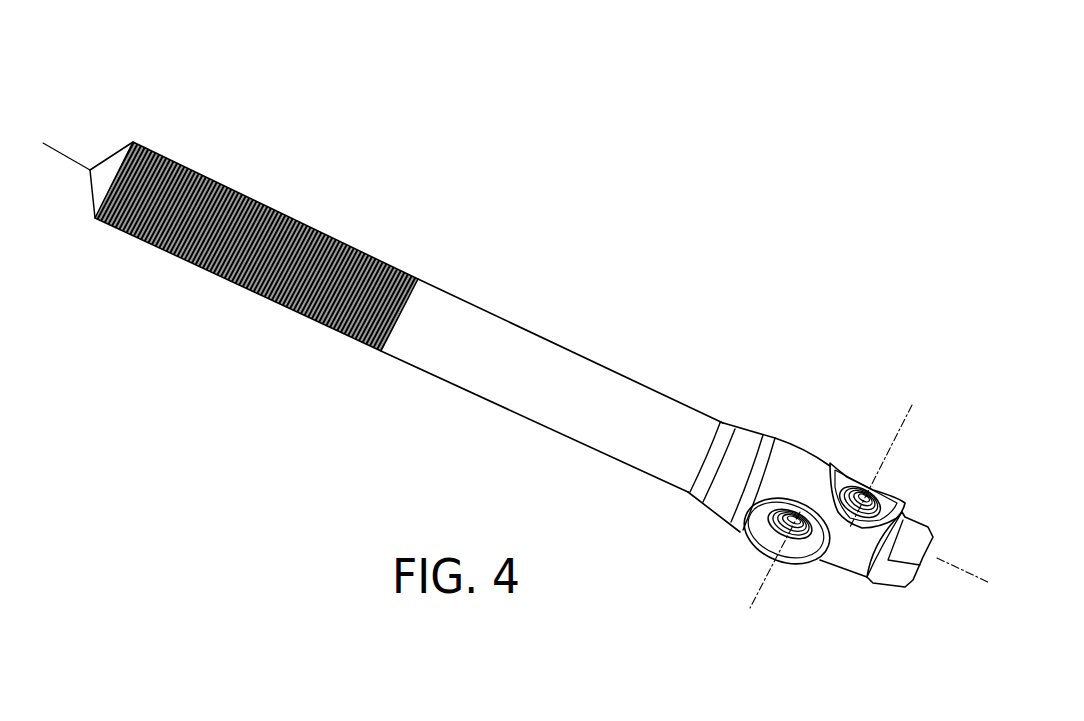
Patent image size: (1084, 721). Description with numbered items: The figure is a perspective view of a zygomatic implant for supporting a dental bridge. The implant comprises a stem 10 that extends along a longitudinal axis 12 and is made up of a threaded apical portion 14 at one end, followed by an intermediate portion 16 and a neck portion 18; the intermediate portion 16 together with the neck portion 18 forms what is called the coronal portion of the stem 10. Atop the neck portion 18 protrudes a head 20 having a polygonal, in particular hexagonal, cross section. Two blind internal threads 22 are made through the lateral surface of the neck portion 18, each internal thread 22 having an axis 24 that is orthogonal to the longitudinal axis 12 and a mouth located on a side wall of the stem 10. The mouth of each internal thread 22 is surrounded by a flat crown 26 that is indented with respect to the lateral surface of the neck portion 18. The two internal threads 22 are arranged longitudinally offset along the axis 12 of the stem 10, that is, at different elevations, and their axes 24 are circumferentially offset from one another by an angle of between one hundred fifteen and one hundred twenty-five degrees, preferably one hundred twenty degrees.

The stem 10 is at (522, 313).
The longitudinal axis 12 is at (67, 157).
The threaded apical portion 14 is at (228, 280).
The intermediate portion 16 is at (458, 372).
The neck portion 18 is at (791, 455).
The head 20 is at (888, 582).
The blind internal threads 22 is at (763, 545).
The axis 24 is at (890, 430).
The flat crown 26 is at (848, 473).